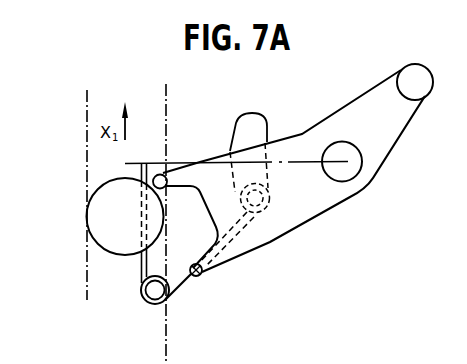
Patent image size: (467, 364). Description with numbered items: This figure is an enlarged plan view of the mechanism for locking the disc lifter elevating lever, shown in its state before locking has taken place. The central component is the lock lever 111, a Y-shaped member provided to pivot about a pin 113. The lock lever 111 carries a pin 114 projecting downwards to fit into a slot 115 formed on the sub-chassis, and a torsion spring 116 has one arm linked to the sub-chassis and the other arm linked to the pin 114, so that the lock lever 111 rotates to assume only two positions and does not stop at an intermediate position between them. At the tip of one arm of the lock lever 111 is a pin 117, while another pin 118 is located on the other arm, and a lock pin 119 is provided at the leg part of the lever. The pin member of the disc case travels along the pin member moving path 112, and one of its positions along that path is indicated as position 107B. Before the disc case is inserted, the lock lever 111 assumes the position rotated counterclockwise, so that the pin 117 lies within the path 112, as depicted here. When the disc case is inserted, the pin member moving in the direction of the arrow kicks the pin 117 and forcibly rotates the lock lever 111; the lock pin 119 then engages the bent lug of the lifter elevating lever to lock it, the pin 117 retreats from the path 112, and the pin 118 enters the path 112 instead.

The pin member position 107B is at (87, 219).
The lock lever 111 is at (329, 123).
The pin member moving path 112 is at (88, 288).
The pin 113 is at (357, 168).
The pin 114 is at (270, 200).
The slot 115 is at (242, 124).
The torsion spring 116 is at (182, 289).
The pin 117 is at (158, 174).
The pin 118 is at (203, 277).
The lock pin 119 is at (427, 97).